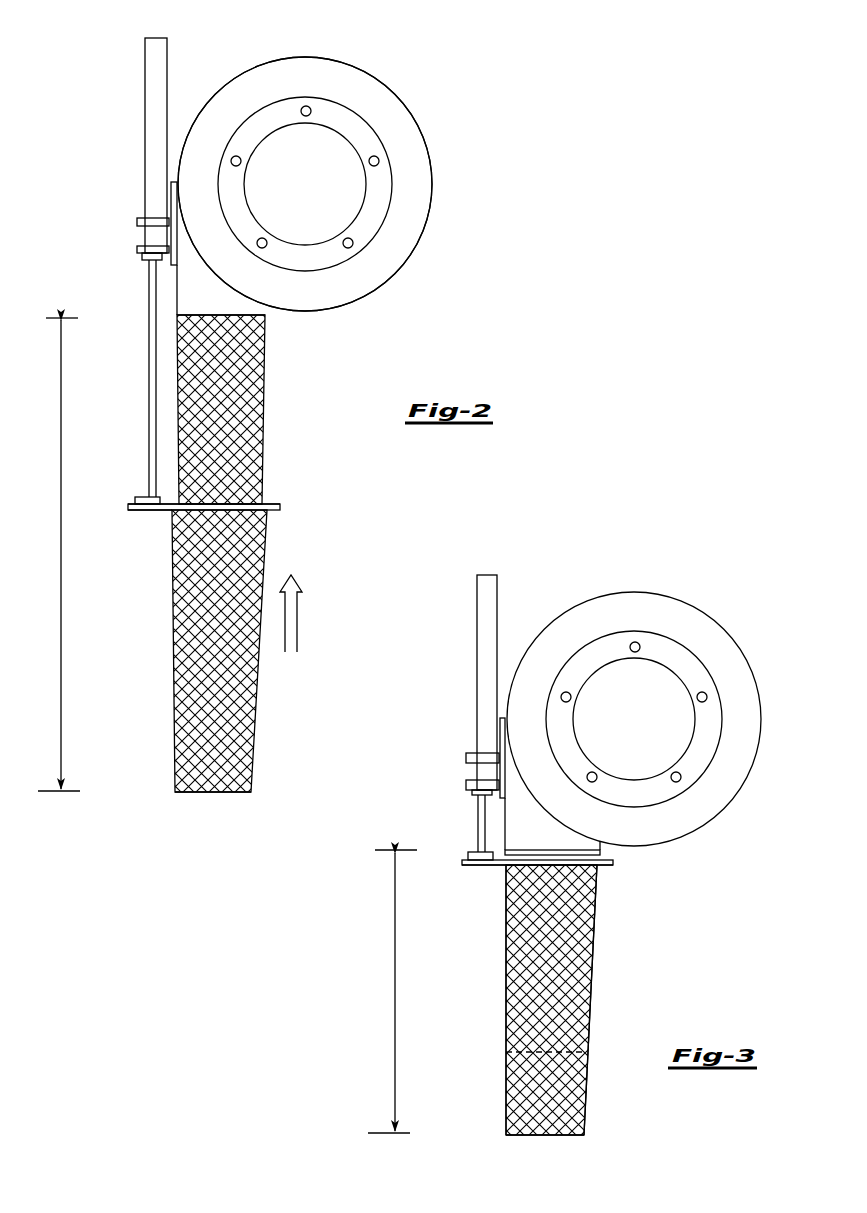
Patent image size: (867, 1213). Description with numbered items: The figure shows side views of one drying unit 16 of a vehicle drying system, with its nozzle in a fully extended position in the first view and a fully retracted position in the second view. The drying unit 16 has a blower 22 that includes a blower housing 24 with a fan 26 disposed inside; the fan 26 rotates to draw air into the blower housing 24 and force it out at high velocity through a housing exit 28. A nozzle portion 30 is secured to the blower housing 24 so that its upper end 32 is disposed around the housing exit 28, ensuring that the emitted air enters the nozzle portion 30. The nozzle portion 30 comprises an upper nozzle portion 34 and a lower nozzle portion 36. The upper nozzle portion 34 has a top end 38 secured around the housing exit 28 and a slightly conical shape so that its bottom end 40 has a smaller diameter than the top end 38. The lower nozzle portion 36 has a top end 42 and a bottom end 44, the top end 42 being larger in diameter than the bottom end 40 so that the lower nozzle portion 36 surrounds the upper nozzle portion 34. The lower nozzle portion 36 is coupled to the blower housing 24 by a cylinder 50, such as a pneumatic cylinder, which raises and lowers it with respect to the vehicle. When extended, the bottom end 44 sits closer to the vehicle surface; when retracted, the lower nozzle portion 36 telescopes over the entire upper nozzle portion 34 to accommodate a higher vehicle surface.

In FIG. 2, the drying unit 16 is at (423, 78).
In FIG. 3, the drying unit 16 is at (753, 615).
In FIG. 2, the blower 22 is at (426, 233).
In FIG. 2, the blower housing 24 is at (422, 183).
In FIG. 3, the blower housing 24 is at (747, 718).
In FIG. 2, the fan 26 is at (292, 167).
In FIG. 3, the fan 26 is at (622, 703).
In FIG. 2, the housing exit 28 is at (255, 311).
In FIG. 3, the housing exit 28 is at (533, 832).
In FIG. 2, the nozzle portion 30 is at (313, 502).
In FIG. 3, the upper end 32 is at (503, 870).
In FIG. 2, the upper nozzle portion 34 is at (255, 410).
In FIG. 3, the upper nozzle portion 34 is at (563, 925).
In FIG. 2, the lower nozzle portion 36 is at (262, 543).
In FIG. 3, the lower nozzle portion 36 is at (593, 968).
In FIG. 2, the top end 38 is at (195, 315).
In FIG. 3, the top end 38 is at (600, 853).
In FIG. 2, the bottom end 40 is at (260, 504).
In FIG. 3, the bottom end 40 is at (570, 1070).
In FIG. 2, the top end 42 is at (165, 510).
In FIG. 3, the top end 42 is at (598, 866).
In FIG. 2, the bottom end 44 is at (197, 792).
In FIG. 3, the bottom end 44 is at (530, 1135).
In FIG. 2, the cylinder 50 is at (157, 93).
In FIG. 3, the cylinder 50 is at (485, 628).